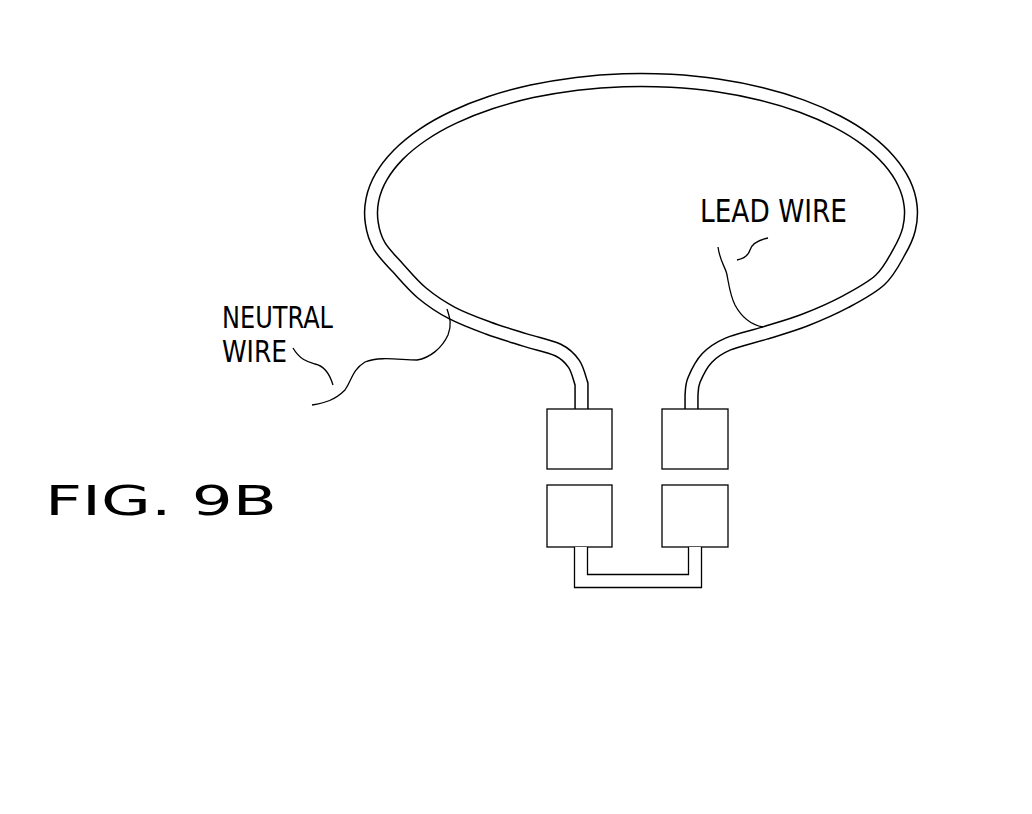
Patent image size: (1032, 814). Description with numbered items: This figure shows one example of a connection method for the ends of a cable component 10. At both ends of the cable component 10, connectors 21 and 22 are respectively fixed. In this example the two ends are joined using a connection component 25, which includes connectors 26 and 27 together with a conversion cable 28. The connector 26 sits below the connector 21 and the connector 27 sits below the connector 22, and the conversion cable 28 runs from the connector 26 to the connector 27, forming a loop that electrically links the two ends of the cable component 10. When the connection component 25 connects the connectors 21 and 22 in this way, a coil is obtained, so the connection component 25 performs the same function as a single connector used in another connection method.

The cable component 10 is at (755, 82).
The connector 21 is at (547, 443).
The connector 22 is at (728, 438).
The connection component 25 is at (642, 557).
The connector 26 is at (547, 520).
The connector 27 is at (728, 512).
The conversion cable 28 is at (689, 570).